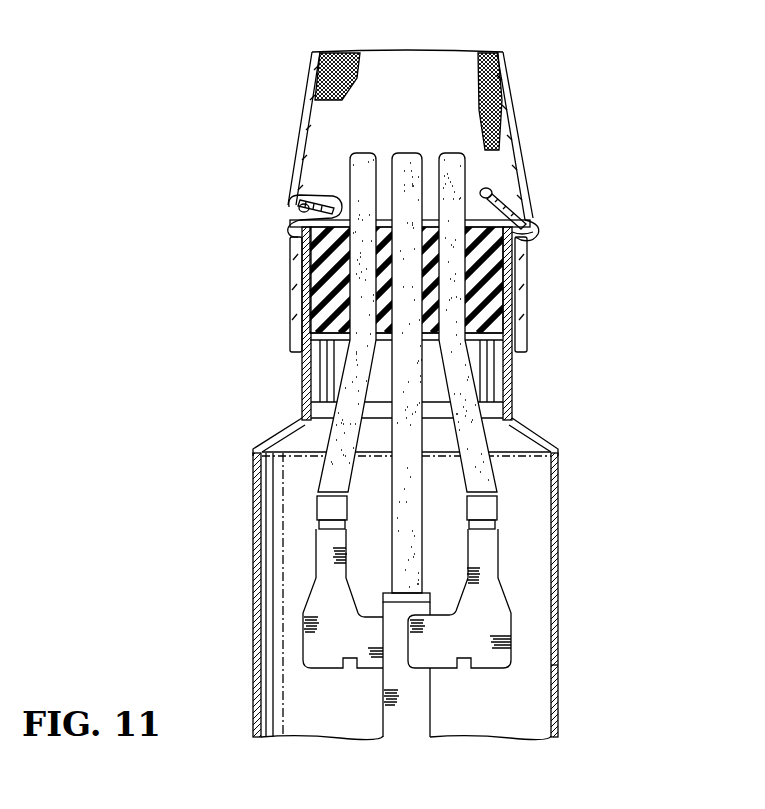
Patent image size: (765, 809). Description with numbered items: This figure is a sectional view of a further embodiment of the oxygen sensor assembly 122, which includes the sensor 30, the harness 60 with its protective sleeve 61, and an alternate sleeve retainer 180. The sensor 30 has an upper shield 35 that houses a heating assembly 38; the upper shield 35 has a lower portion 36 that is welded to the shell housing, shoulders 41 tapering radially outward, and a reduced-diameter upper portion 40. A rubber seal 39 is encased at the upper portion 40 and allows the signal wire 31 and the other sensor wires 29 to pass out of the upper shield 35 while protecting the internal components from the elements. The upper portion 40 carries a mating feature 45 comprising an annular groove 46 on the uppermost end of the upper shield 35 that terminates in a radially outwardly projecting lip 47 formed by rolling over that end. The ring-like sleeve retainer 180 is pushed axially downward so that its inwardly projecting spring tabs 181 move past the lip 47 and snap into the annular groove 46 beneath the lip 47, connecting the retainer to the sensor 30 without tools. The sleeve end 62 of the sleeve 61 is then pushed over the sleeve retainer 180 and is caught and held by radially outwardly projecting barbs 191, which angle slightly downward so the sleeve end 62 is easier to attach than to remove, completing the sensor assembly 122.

The sensor assembly 122 is at (414, 111).
The harness 60 is at (510, 78).
The protective sleeve 61 is at (307, 89).
The sensor wires 29 is at (360, 153).
The signal wire 31 is at (408, 153).
The rubber seal 39 is at (497, 270).
The sleeve end 62 is at (377, 238).
The outwardly projecting lip 47 is at (322, 190).
The mating feature 45 is at (300, 210).
The annular groove 46 is at (308, 204).
The spring tabs 181 is at (482, 195).
The sleeve retainer 180 is at (514, 203).
The barbs 191 is at (532, 231).
The upper portion 40 is at (511, 390).
The shoulders 41 is at (535, 432).
The sensor 30 is at (439, 596).
The upper shield 35 is at (561, 602).
The lower portion 36 is at (556, 665).
The heating assembly 38 is at (410, 737).